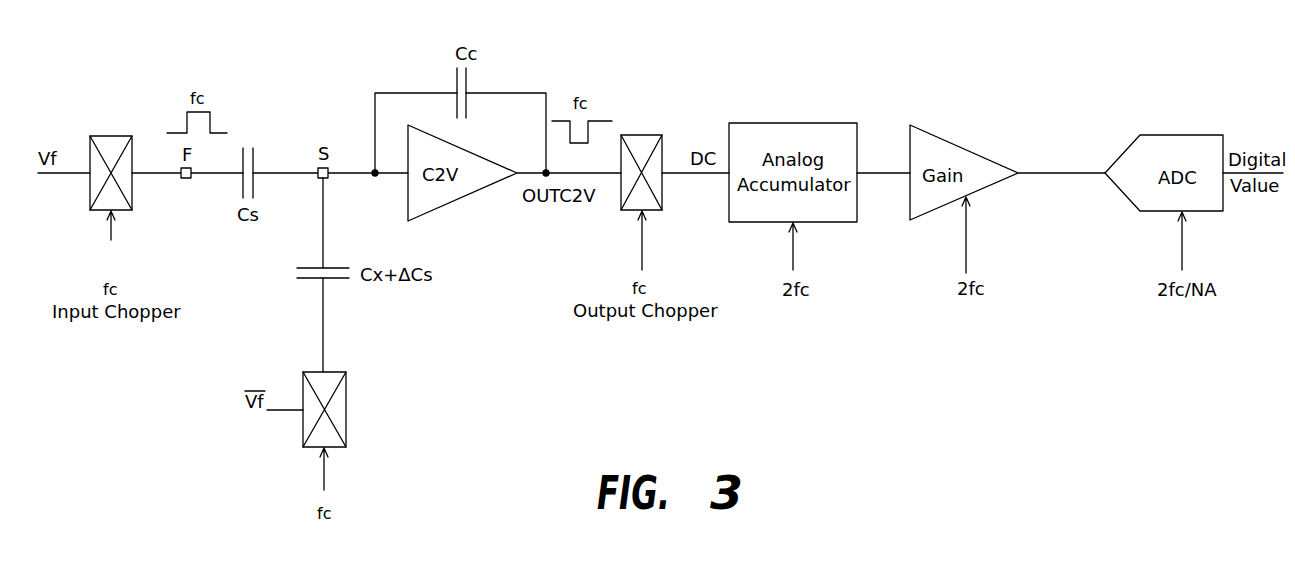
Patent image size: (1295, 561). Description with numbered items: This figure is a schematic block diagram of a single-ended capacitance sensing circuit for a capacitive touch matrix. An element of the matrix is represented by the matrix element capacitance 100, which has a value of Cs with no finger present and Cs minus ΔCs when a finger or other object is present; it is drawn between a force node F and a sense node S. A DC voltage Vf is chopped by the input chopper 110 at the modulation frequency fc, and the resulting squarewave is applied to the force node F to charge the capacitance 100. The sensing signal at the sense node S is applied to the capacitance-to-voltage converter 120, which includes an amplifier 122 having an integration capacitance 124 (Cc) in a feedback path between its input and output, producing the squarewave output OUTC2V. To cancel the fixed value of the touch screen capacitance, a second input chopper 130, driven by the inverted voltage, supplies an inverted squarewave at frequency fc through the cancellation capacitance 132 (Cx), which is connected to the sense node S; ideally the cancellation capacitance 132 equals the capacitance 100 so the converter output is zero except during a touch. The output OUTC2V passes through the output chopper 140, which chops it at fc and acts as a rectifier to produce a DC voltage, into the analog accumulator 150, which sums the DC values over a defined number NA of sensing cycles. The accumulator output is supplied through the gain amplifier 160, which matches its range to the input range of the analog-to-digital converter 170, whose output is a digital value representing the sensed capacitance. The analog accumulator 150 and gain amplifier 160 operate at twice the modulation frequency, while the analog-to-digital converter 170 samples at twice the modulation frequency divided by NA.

The matrix element capacitance 100 is at (253, 160).
The input chopper 110 is at (131, 136).
The capacitance-to-voltage converter 120 is at (522, 74).
The amplifier 122 is at (457, 198).
The integration capacitance 124 is at (453, 78).
The input chopper 130 is at (343, 372).
The cancellation capacitance 132 is at (315, 280).
The output chopper 140 is at (642, 135).
The analog accumulator 150 is at (822, 123).
The gain amplifier 160 is at (950, 140).
The analog-to-digital converter 170 is at (1168, 135).